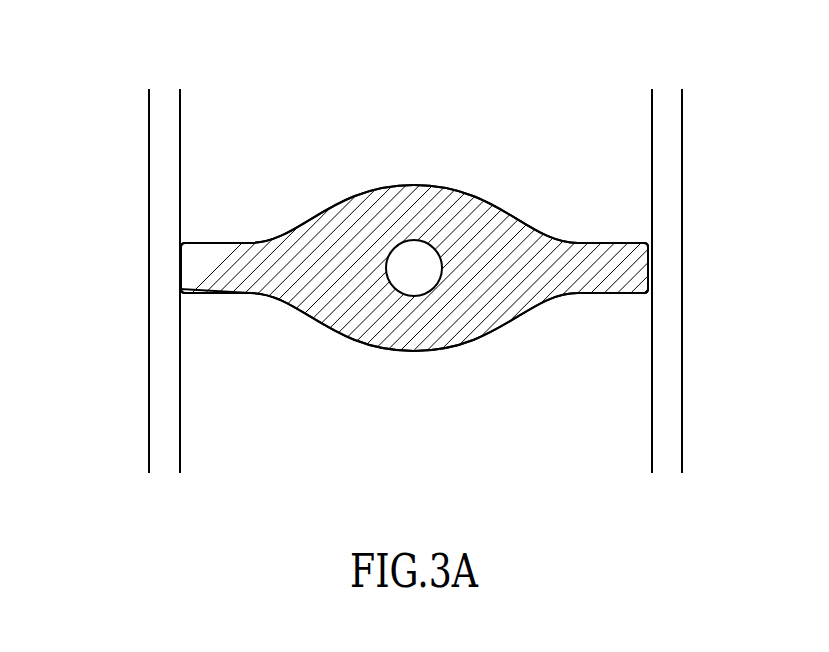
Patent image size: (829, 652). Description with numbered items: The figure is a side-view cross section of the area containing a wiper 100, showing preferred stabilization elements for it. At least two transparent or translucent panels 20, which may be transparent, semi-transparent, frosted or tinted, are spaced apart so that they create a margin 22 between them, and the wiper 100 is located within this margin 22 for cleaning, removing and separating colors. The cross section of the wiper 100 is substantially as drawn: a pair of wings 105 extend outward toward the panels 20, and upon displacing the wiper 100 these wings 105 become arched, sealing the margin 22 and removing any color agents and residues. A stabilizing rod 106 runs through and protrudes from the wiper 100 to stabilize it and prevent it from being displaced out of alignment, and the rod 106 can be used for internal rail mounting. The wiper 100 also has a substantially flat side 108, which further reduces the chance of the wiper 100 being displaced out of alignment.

The transparent or translucent panels 20 is at (153, 368).
The margin 22 is at (324, 106).
The wiper 100 is at (408, 375).
The wings 105 is at (220, 296).
The stabilizing rod 106 is at (420, 262).
The substantially flat side 108 is at (317, 238).